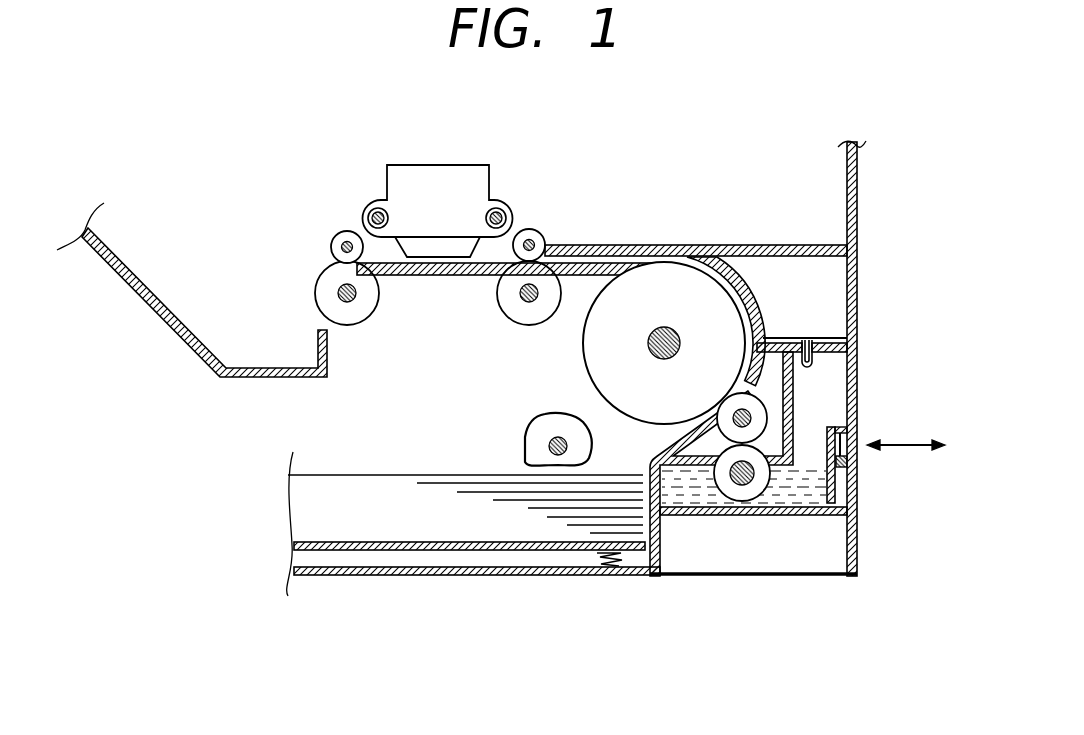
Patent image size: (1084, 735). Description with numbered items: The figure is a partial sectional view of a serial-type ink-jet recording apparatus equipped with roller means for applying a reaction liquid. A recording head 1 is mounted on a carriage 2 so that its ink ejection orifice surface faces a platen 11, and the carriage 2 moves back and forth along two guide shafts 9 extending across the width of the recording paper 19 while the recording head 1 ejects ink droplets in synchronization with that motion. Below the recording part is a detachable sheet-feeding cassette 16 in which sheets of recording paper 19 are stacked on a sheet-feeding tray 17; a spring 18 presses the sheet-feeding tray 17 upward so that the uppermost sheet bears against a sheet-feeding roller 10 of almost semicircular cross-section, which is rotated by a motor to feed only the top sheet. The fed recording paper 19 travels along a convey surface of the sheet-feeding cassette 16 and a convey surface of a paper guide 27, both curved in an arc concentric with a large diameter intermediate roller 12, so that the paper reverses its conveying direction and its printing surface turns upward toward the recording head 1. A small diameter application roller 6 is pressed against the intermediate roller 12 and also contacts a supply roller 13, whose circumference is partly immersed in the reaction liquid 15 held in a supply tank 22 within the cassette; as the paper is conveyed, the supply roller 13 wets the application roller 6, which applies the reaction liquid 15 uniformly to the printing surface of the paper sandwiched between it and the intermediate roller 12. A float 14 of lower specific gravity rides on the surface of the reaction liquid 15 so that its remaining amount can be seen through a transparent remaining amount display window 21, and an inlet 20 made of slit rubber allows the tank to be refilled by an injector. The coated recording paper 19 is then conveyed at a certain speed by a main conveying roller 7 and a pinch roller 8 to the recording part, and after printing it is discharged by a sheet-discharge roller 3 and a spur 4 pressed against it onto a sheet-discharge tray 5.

The recording head 1 is at (418, 252).
The carriage 2 is at (458, 170).
The sheet-discharge roller 3 is at (359, 312).
The spur 4 is at (337, 240).
The sheet-discharge tray 5 is at (157, 315).
The application roller 6 is at (757, 416).
The main conveying roller 7 is at (523, 317).
The pinch roller 8 is at (535, 237).
The guide shafts 9 is at (372, 212).
The sheet-feeding roller 10 is at (528, 440).
The platen 11 is at (460, 268).
The intermediate roller 12 is at (608, 372).
The supply roller 13 is at (727, 492).
The float 14 is at (858, 455).
The reaction liquid 15 is at (793, 500).
The sheet-feeding cassette 16 is at (857, 553).
The sheet-feeding tray 17 is at (410, 548).
The spring 18 is at (597, 555).
The recording paper 19 is at (278, 472).
The inlet 20 is at (805, 347).
The remaining amount display window 21 is at (857, 494).
The supply tank 22 is at (828, 380).
The paper guide 27 is at (757, 283).